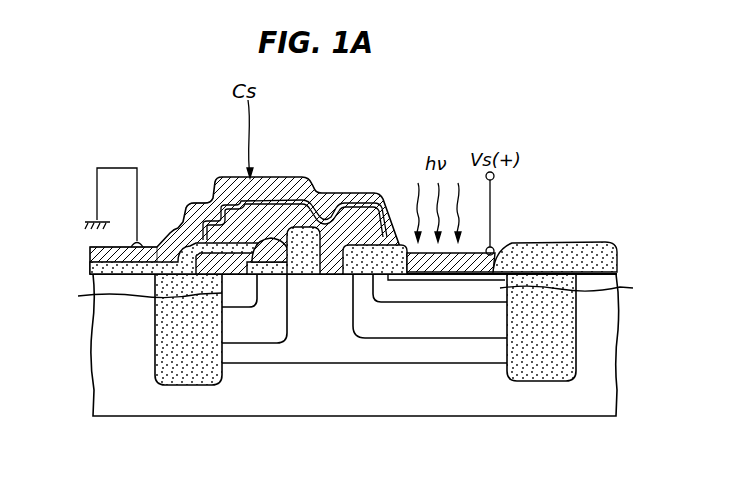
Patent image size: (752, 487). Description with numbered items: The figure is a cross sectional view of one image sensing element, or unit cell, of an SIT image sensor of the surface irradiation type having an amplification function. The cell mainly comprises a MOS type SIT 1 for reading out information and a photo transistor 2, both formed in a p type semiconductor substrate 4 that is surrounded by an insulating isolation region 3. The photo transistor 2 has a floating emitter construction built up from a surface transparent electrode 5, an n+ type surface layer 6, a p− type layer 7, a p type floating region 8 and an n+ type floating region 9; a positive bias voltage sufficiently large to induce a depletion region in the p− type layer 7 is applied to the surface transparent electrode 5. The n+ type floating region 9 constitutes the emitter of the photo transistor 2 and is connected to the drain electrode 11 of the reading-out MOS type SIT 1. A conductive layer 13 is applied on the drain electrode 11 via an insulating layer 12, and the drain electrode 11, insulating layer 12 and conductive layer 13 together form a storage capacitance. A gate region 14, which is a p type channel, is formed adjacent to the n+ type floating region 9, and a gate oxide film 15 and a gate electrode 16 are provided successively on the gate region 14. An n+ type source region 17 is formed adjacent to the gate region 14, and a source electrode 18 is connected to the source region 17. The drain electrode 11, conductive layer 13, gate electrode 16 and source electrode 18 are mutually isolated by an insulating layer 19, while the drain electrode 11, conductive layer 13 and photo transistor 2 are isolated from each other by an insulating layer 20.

The MOS type SIT 1 is at (269, 163).
The photo transistor 2 is at (504, 195).
The insulating isolation region 3 is at (186, 388).
The p type semiconductor substrate 4 is at (355, 402).
The surface transparent electrode 5 is at (467, 253).
The n+ type surface layer 6 is at (500, 262).
The p− type layer 7 is at (575, 291).
The p type floating region 8 is at (487, 330).
The n+ type floating region 9 is at (430, 354).
The drain electrode 11 is at (358, 240).
The insulating layer 12 is at (258, 225).
The conductive layer 13 is at (300, 200).
The gate region 14 is at (238, 340).
The gate oxide film 15 is at (283, 292).
The gate electrode 16 is at (235, 222).
The n+ type source region 17 is at (137, 298).
The source electrode 18 is at (203, 240).
The insulating layer 19 is at (88, 245).
The insulating layer 20 is at (395, 245).